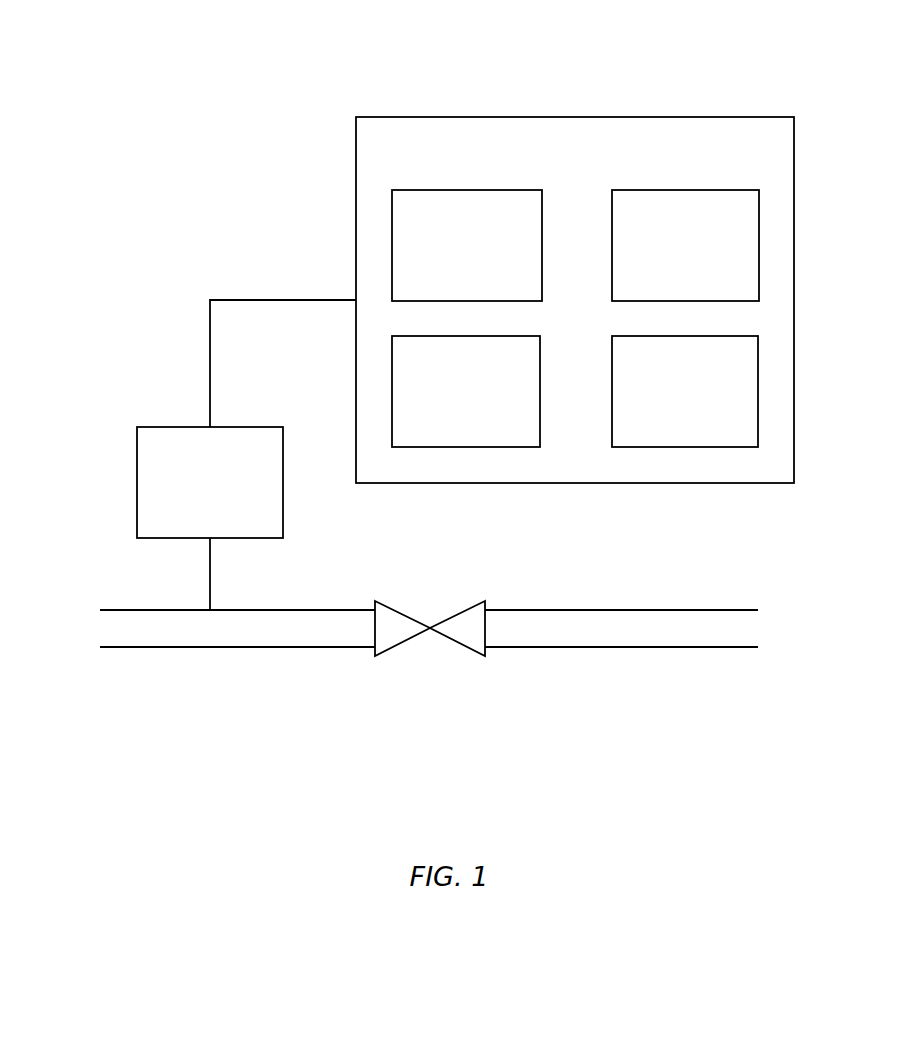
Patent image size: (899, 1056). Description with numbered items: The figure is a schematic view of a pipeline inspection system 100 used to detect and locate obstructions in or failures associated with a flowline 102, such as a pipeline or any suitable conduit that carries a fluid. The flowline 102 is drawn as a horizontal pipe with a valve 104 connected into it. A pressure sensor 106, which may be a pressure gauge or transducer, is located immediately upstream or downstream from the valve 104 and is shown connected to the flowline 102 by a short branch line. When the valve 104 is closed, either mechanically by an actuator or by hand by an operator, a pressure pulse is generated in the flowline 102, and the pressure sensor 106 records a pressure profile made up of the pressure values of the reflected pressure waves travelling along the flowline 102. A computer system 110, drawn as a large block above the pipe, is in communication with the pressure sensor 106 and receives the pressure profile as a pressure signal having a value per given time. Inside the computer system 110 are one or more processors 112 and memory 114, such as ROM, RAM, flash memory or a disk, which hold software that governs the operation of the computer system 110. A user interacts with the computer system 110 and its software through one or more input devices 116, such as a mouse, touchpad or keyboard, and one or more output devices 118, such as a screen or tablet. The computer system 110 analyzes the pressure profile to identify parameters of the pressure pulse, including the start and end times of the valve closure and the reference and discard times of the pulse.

The pipeline inspection system 100 is at (132, 52).
The flowline 102 is at (687, 610).
The valve 104 is at (430, 628).
The pressure sensor 106 is at (229, 494).
The computer system 110 is at (594, 176).
The processors 112 is at (486, 254).
The memory 114 is at (704, 254).
The input devices 116 is at (486, 400).
The output devices 118 is at (704, 400).